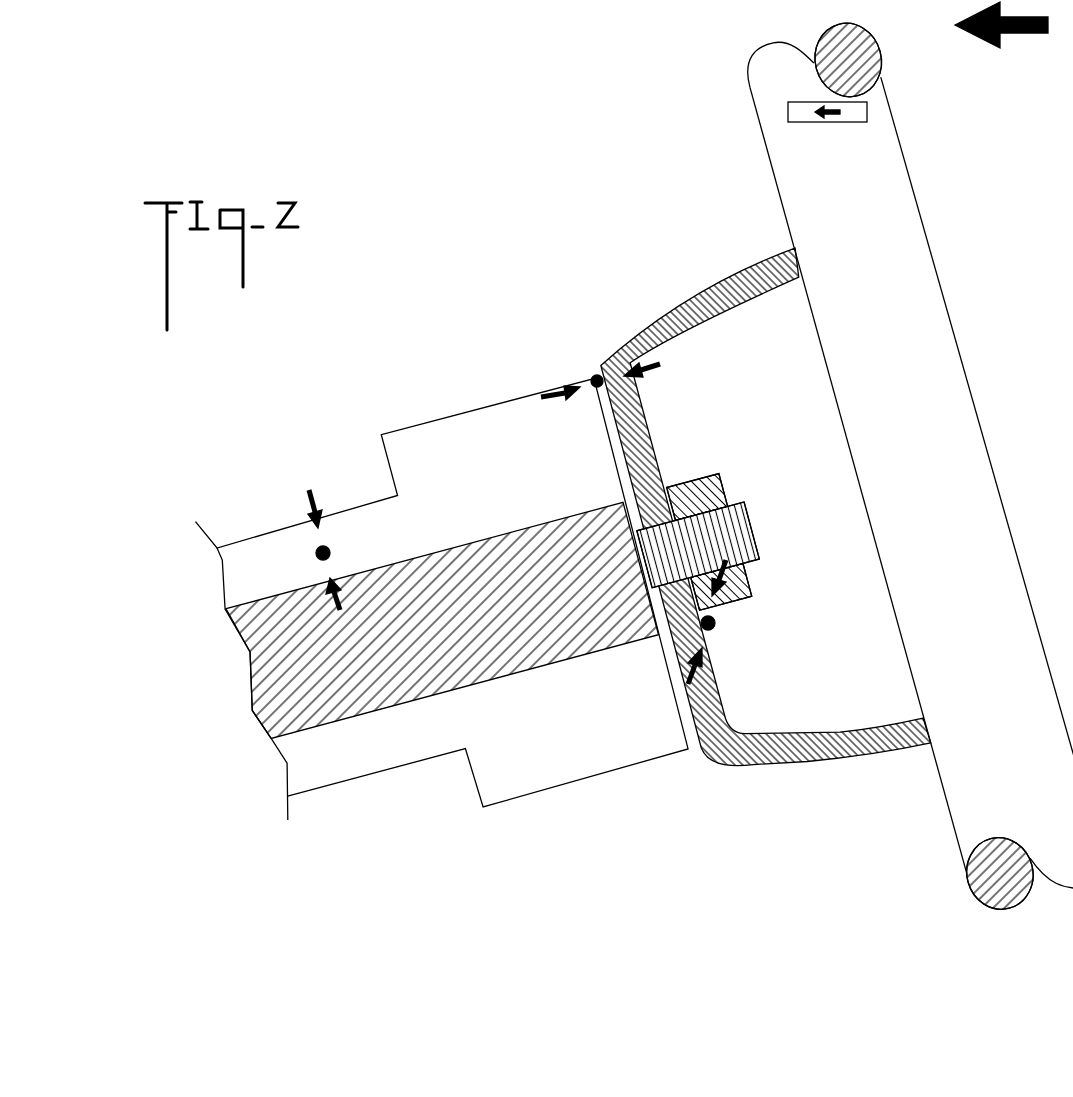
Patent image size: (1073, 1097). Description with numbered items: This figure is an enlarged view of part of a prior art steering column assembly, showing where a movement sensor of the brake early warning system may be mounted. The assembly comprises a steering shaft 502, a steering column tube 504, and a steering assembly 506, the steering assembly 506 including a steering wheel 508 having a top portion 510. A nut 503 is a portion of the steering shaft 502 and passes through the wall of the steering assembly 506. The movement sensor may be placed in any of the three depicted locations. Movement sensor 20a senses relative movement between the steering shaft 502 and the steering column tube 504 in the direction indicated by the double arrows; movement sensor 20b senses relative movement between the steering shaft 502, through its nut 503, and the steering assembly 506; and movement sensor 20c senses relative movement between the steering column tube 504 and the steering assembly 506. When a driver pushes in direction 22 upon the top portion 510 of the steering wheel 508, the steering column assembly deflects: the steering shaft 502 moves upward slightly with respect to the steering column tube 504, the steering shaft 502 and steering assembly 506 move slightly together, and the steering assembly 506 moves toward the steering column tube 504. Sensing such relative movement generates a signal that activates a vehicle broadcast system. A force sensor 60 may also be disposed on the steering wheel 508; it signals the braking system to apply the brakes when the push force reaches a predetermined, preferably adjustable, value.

The movement sensor 20a is at (331, 558).
The movement sensor 20b is at (715, 628).
The movement sensor 20c is at (590, 378).
The direction 22 is at (1007, 30).
The force sensor 60 is at (812, 123).
The steering shaft 502 is at (470, 540).
The nut 503 is at (755, 568).
The steering column tube 504 is at (478, 403).
The steering assembly 506 is at (693, 297).
The steering wheel 508 is at (967, 370).
The top portion 510 is at (753, 70).